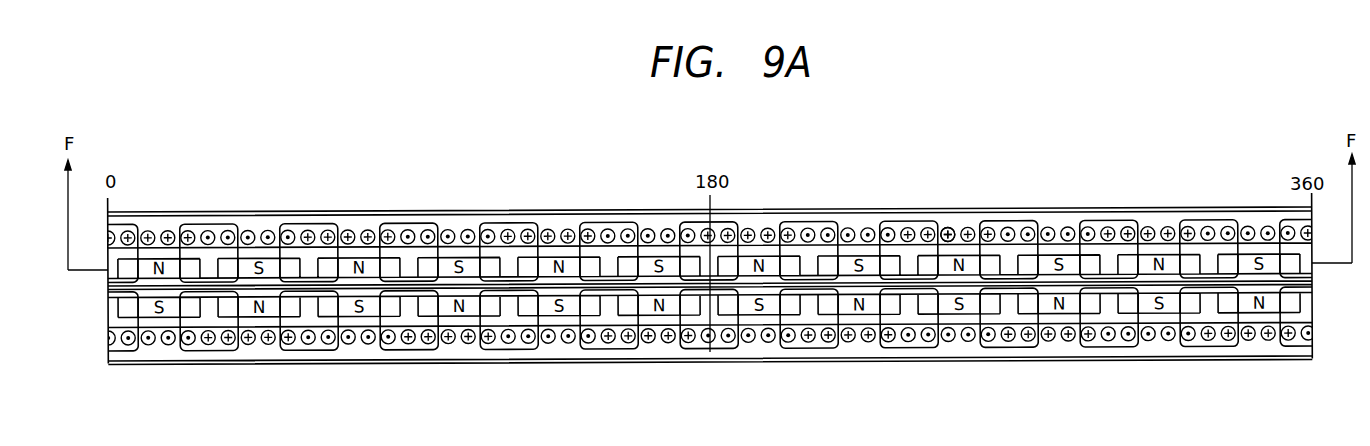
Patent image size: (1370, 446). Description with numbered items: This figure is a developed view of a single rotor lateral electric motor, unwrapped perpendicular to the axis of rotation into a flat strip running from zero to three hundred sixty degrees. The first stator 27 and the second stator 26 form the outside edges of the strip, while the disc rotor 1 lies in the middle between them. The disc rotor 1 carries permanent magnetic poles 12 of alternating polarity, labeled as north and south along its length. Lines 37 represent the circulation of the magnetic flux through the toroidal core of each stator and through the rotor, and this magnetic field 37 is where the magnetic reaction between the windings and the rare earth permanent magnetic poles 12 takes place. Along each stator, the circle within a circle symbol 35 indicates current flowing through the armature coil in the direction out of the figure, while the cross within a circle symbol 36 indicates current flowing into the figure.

The disc rotor 1 is at (685, 284).
The permanent magnetic poles 12 is at (1070, 276).
The second stator 26 is at (345, 349).
The first stator 27 is at (281, 210).
The circle within a circle symbol 35 is at (729, 306).
The cross within a circle symbol 36 is at (950, 226).
The magnetic flux lines 37 is at (543, 288).